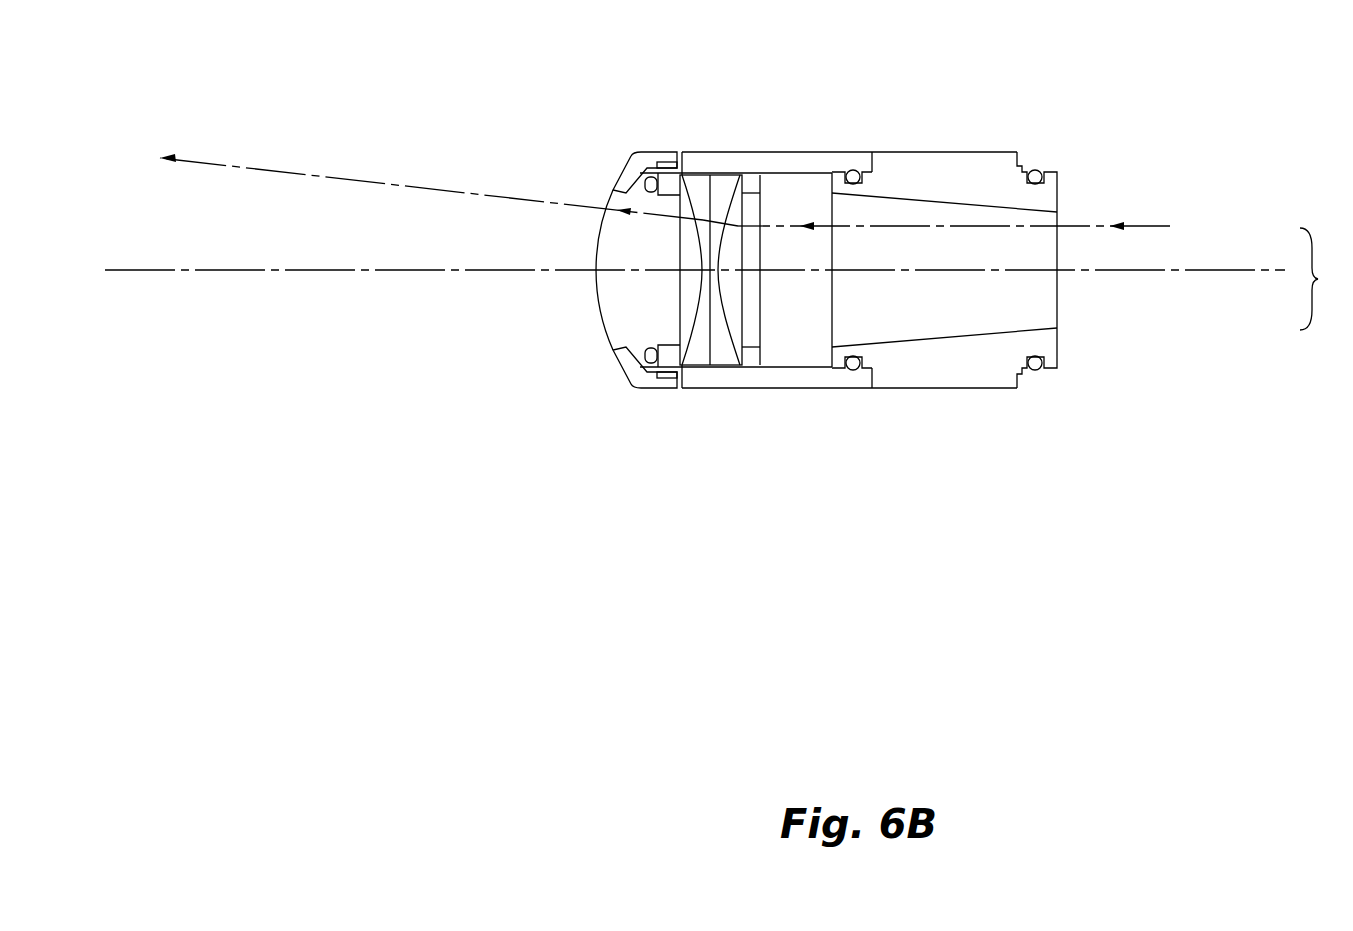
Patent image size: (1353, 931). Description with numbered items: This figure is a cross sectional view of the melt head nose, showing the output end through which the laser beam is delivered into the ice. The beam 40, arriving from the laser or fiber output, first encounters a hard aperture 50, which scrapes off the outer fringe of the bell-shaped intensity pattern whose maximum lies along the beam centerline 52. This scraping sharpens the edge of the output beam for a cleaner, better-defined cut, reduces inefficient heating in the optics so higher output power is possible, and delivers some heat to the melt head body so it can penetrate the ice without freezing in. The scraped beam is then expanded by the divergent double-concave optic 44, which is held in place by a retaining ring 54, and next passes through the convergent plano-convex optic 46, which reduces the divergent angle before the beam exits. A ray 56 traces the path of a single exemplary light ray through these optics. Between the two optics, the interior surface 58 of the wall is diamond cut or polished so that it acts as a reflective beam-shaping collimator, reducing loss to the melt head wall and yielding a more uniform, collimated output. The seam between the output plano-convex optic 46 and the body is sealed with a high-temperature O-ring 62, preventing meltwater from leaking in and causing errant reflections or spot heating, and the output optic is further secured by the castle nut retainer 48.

The beam 40 is at (1325, 279).
The double-concave optic 44 is at (719, 176).
The plano-convex optic 46 is at (633, 180).
The castle nut retainer 48 is at (624, 376).
The hard aperture 50 is at (1064, 348).
The beam centerline 52 is at (360, 288).
The retaining ring 54 is at (751, 358).
The ray 56 is at (1135, 216).
The interior surface 58 is at (673, 352).
The O-ring 62 is at (655, 374).